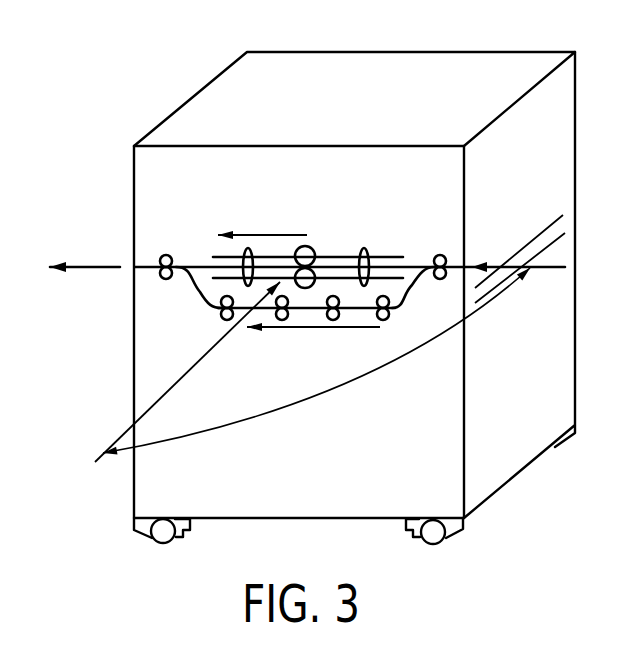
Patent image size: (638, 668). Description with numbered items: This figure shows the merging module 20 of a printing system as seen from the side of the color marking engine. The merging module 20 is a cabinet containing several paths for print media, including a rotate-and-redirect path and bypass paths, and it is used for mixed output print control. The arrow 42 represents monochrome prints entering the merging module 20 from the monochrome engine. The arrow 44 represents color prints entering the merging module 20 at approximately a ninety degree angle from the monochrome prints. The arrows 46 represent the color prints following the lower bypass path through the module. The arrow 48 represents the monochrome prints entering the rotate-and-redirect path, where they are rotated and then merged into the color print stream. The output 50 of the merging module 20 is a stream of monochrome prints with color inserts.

The merging module 20 is at (145, 92).
The arrow 42 is at (545, 268).
The arrow 44 is at (217, 342).
The arrows 46 is at (297, 327).
The arrow 48 is at (283, 235).
The output 50 is at (80, 267).